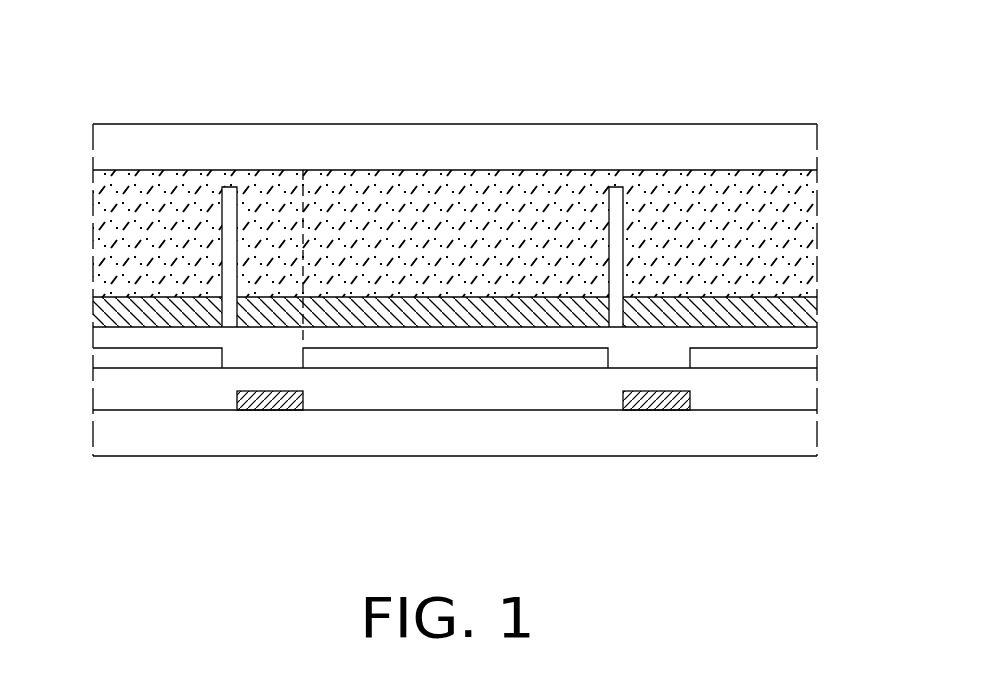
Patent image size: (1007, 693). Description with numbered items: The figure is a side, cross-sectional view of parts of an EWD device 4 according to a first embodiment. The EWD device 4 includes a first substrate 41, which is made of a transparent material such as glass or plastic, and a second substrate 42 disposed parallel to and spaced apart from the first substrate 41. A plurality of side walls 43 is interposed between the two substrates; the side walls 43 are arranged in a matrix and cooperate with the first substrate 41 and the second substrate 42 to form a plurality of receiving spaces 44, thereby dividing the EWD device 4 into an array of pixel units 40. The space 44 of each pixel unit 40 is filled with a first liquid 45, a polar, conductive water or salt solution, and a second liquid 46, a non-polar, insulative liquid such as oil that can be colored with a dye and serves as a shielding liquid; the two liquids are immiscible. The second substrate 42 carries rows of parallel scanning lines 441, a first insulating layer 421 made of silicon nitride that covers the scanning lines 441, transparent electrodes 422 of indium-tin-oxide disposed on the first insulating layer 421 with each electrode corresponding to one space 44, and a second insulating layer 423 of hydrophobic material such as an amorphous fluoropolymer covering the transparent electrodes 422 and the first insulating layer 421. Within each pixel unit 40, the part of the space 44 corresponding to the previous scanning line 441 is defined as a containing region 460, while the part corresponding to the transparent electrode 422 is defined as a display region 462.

The EWD device 4 is at (452, 49).
The pixel unit 40 is at (572, 122).
The first substrate 41 is at (785, 147).
The second substrate 42 is at (795, 437).
The first insulating layer 421 is at (795, 388).
The transparent electrode 422 is at (795, 357).
The second insulating layer 423 is at (795, 334).
The side wall 43 is at (227, 195).
The receiving space 44 is at (328, 212).
The first liquid 45 is at (443, 208).
The second liquid 46 is at (130, 311).
The containing region 460 is at (273, 328).
The scanning line 441 is at (268, 401).
The display region 462 is at (435, 326).